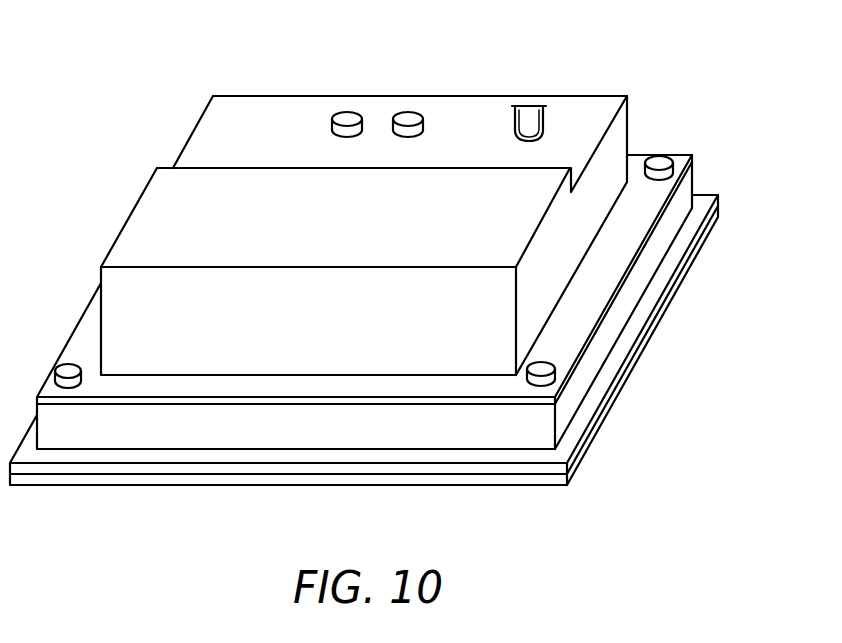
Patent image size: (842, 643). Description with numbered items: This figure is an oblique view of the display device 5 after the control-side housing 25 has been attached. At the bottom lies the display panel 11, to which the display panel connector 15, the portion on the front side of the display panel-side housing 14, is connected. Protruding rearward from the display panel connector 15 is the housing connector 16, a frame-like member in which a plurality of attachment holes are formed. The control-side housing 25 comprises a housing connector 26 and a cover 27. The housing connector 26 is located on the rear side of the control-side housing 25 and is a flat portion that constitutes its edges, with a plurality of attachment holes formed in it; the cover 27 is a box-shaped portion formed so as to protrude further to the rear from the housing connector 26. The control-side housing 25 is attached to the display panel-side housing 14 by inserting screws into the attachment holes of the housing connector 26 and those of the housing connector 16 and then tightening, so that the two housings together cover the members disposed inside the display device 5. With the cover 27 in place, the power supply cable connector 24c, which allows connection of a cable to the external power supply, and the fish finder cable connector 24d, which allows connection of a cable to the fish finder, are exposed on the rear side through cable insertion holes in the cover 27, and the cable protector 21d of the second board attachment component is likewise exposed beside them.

The display device 5 is at (77, 117).
The display panel 11 is at (572, 474).
The display panel-side housing 14 is at (582, 378).
The display panel connector 15 is at (703, 200).
The housing connector 16 is at (658, 248).
The cable protector 21d is at (538, 120).
The power supply cable connector 24c is at (333, 127).
The fish finder cable connector 24d is at (423, 127).
The control-side housing 25 is at (685, 119).
The housing connector 26 is at (638, 162).
The cover 27 is at (232, 103).